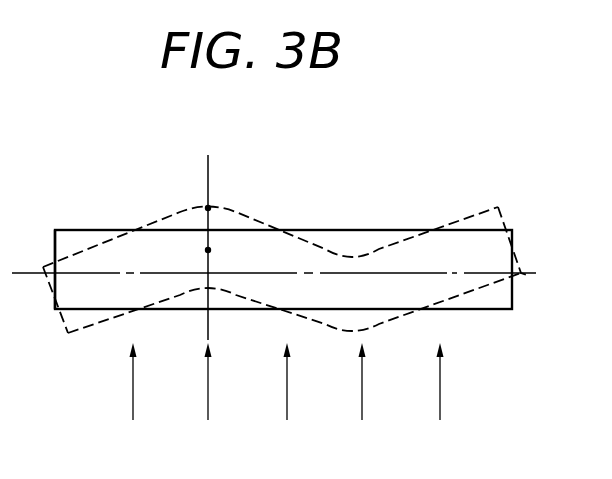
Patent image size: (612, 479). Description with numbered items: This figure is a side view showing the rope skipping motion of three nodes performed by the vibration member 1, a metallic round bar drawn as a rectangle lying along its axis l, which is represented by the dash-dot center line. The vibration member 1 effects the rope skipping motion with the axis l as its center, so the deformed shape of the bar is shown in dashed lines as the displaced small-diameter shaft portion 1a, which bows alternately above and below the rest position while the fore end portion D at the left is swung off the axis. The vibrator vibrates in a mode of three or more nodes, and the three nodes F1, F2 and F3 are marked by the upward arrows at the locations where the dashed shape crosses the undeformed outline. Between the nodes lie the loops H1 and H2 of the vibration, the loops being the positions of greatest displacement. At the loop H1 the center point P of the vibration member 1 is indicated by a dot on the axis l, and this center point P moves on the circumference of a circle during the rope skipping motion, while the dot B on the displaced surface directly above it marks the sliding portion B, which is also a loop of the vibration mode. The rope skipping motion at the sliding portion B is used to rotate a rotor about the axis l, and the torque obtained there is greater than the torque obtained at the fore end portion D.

The vibration member 1 is at (487, 302).
The small-diameter shaft portion 1a is at (260, 216).
The fore end portion D is at (55, 230).
The center point of the loop P is at (208, 250).
The sliding portion B is at (208, 208).
The node F1 is at (134, 398).
The loop H1 is at (210, 304).
The node F2 is at (288, 398).
The loop H2 is at (364, 398).
The node F3 is at (441, 398).
The axis l is at (283, 272).